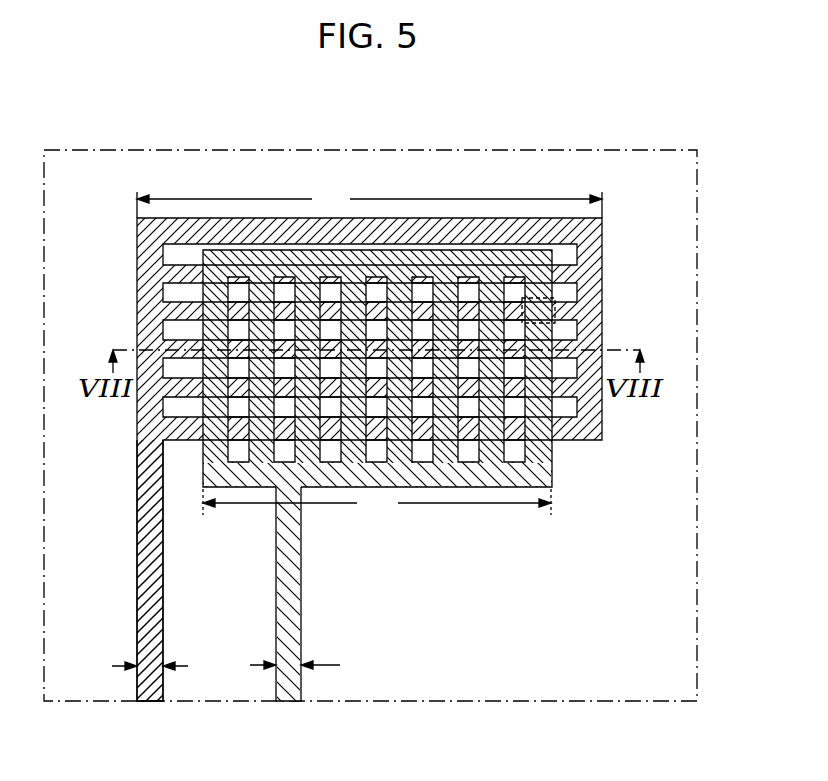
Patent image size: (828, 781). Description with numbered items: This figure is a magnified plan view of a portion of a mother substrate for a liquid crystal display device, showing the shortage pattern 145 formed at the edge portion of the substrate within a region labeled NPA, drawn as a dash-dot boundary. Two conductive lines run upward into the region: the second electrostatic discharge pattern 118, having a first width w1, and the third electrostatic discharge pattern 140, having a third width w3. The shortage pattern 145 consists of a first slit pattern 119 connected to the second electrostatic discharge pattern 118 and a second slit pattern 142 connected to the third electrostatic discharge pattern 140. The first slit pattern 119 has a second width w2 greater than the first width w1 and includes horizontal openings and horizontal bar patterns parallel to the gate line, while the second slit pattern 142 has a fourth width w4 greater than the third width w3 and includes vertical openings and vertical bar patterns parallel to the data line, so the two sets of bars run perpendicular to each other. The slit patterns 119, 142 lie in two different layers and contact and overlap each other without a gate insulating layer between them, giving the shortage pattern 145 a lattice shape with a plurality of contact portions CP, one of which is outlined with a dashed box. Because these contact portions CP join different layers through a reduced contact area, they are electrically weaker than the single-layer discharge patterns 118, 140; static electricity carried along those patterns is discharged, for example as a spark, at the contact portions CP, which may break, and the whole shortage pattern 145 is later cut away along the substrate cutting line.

The second electrostatic discharge pattern 118 is at (137, 590).
The first slit pattern 119 is at (361, 206).
The third electrostatic discharge pattern 140 is at (301, 612).
The second slit pattern 142 is at (426, 236).
The shortage pattern 145 is at (452, 108).
The contact portion CP is at (556, 300).
The non-pixel area NPA is at (685, 737).
The first width w1 is at (157, 656).
The second width w2 is at (369, 203).
The third width w3 is at (296, 657).
The fourth width w4 is at (377, 503).